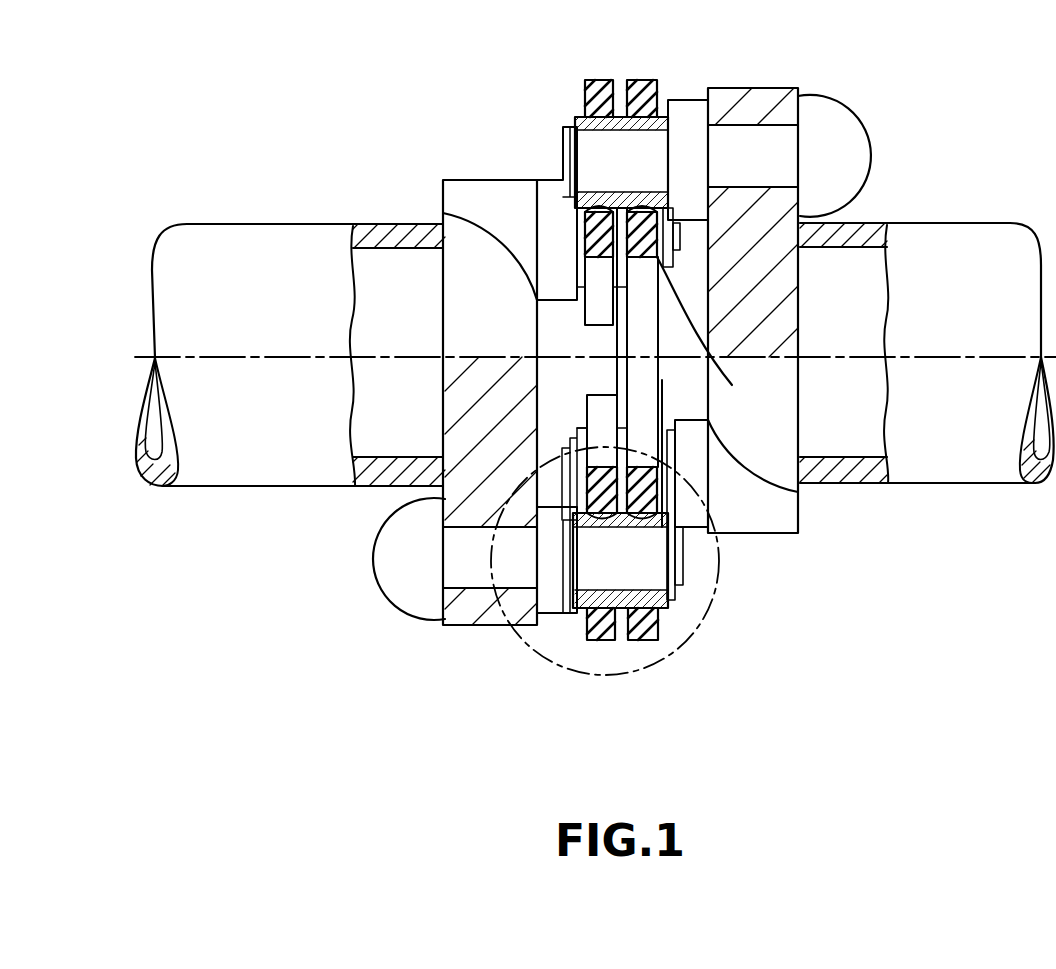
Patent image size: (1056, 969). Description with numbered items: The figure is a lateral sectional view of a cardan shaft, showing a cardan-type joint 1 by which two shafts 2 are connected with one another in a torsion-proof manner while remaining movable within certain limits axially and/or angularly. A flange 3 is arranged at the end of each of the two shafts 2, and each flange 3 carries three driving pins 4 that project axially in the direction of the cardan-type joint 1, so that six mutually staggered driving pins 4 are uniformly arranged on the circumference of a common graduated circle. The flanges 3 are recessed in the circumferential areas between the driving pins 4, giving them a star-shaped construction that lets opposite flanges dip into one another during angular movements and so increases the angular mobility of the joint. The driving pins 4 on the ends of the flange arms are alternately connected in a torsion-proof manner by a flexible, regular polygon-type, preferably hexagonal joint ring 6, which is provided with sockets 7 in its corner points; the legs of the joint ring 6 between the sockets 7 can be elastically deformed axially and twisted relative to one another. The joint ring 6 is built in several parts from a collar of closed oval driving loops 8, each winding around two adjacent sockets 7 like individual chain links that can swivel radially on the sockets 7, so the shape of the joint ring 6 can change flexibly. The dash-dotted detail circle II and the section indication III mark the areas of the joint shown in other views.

The cardan-type joint 1 is at (820, 68).
The shaft 2 is at (274, 250).
The flange 3 is at (470, 193).
The driving pin 4 is at (783, 152).
The joint ring 6 is at (578, 645).
The socket 7 is at (582, 115).
The driving loop 8 is at (645, 480).
The detail circle II is at (660, 663).
The section line III is at (543, 184).